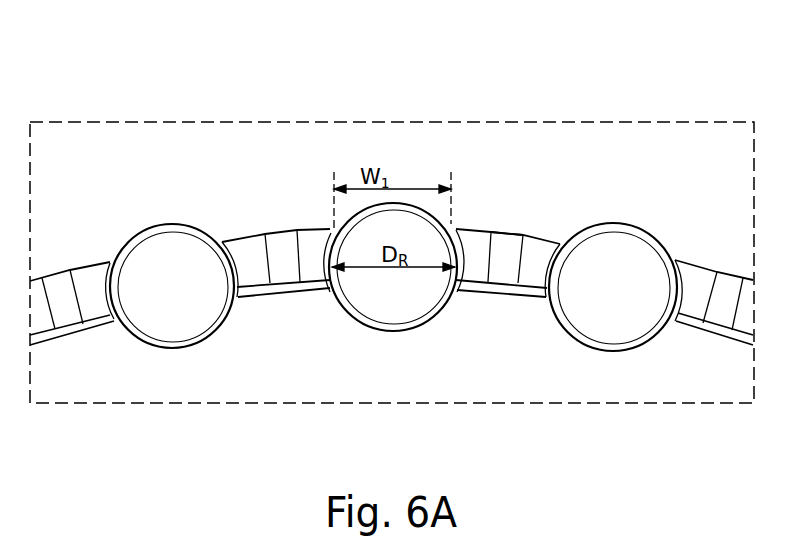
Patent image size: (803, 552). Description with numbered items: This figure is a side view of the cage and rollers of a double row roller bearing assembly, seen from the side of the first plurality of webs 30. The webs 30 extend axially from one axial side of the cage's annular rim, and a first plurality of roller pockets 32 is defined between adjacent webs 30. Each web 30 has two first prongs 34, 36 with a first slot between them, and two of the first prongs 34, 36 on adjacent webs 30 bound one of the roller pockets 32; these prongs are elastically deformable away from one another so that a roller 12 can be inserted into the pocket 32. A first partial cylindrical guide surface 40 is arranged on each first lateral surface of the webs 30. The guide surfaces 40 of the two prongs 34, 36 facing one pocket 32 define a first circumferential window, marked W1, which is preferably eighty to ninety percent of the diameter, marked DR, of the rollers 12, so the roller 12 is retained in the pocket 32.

The roller 12 is at (398, 237).
The first plurality of webs 30 is at (313, 270).
The first plurality of roller pockets 32 is at (462, 273).
The first prong 34 is at (308, 243).
The first prong 36 is at (480, 247).
The first partial cylindrical guide surface 40 is at (477, 248).